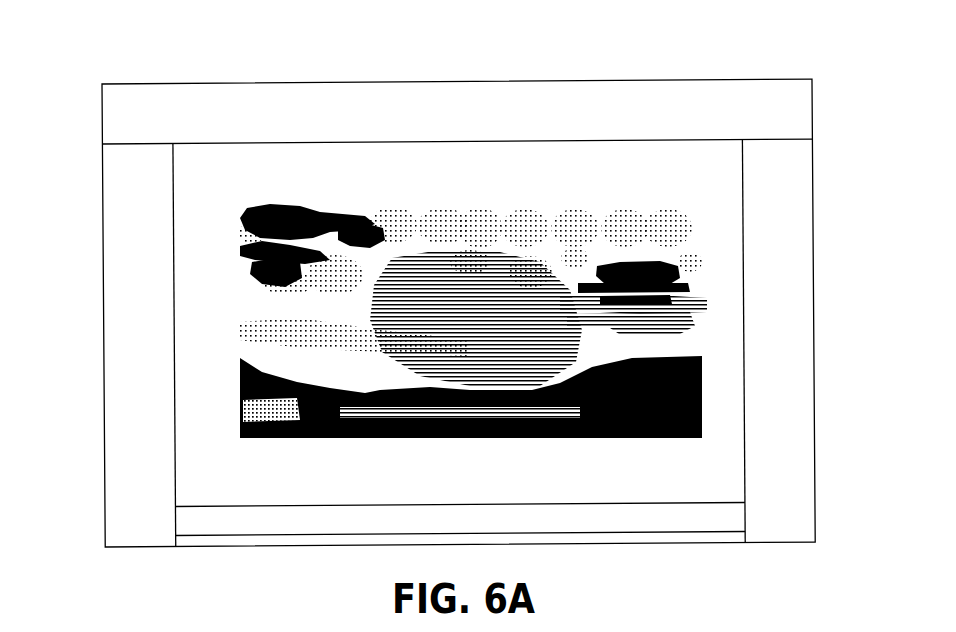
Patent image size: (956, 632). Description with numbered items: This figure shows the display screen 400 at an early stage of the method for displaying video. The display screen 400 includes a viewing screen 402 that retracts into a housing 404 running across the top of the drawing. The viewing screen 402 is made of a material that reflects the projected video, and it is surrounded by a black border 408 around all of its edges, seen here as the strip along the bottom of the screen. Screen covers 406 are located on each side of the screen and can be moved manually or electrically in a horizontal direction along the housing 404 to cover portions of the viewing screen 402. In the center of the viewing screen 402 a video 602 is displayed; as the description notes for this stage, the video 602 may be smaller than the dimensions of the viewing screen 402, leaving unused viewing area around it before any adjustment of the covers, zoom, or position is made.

The display screen 400 is at (645, 70).
The viewing screen 402 is at (454, 190).
The housing 404 is at (200, 84).
The screen covers 406 is at (819, 572).
The black border 408 is at (612, 565).
The video 602 is at (536, 438).